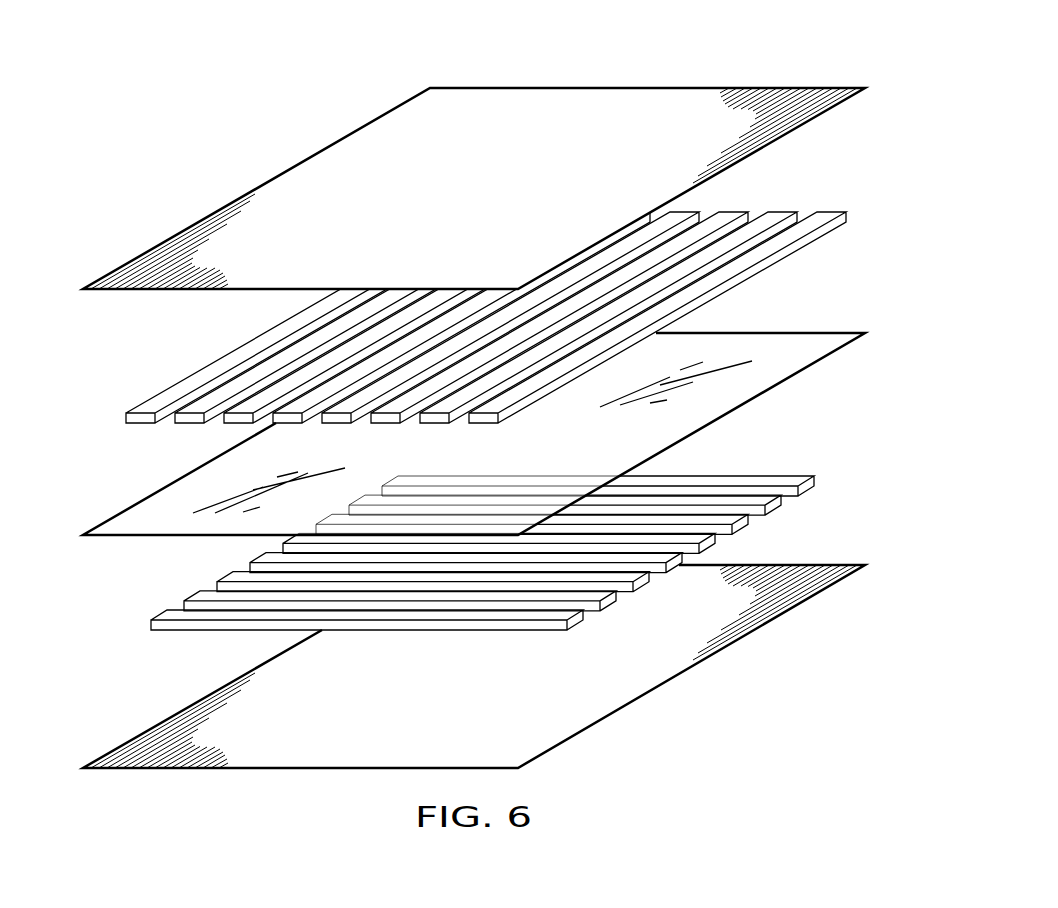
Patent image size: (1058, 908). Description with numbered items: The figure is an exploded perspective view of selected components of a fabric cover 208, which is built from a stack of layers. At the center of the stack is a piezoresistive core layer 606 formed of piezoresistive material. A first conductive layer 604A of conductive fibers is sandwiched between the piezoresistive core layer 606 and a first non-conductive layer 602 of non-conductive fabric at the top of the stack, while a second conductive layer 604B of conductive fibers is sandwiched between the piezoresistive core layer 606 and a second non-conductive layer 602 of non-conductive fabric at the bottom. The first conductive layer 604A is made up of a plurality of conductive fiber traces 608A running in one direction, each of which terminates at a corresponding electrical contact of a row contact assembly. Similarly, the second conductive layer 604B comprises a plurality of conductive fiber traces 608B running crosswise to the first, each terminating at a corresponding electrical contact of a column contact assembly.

The fabric cover 208 is at (486, 389).
The non-conductive layer 602 is at (645, 87).
The first conductive layer 604A is at (486, 306).
The second conductive layer 604B is at (481, 563).
The piezoresistive core layer 606 is at (812, 340).
The conductive fiber traces 608A is at (125, 416).
The conductive fiber traces 608B is at (150, 621).